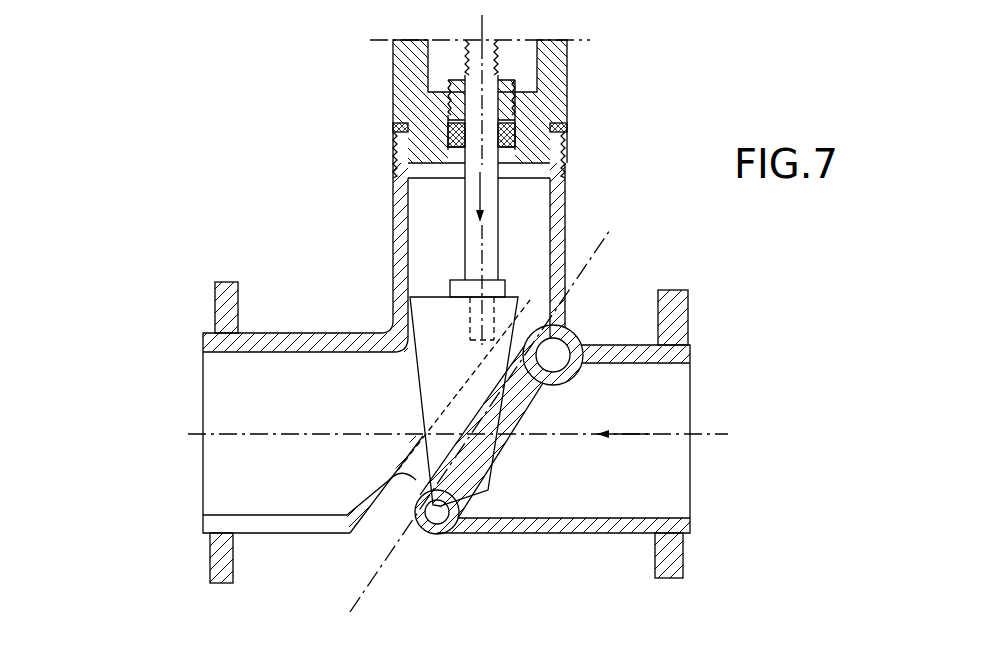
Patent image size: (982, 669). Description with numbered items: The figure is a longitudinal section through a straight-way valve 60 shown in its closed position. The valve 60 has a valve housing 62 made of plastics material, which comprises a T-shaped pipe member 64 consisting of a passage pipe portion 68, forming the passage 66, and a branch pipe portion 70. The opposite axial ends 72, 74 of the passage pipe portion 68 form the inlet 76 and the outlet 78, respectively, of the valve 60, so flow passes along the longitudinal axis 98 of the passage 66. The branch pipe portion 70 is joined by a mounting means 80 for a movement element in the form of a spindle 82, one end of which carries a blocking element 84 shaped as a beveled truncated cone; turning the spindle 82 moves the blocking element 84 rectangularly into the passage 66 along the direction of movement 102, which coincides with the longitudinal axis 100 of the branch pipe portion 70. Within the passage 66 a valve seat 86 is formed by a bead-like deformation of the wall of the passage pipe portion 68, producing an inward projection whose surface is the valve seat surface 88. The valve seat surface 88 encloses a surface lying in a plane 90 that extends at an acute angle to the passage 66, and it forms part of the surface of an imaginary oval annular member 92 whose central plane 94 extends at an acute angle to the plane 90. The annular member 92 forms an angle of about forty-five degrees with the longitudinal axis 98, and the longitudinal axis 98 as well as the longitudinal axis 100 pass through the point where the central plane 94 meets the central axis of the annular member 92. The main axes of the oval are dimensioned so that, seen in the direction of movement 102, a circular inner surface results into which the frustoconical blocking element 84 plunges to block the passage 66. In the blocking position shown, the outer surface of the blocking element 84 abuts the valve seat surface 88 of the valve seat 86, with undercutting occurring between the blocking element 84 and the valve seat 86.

The valve 60 is at (288, 106).
The valve housing 62 is at (348, 245).
The T-shaped pipe member 64 is at (620, 255).
The passage 66 is at (560, 488).
The passage pipe portion 68 is at (626, 556).
The branch pipe portion 70 is at (591, 153).
The axial end 72 is at (680, 476).
The axial end 74 is at (228, 460).
The inlet 76 is at (722, 414).
The outlet 78 is at (188, 377).
The mounting means 80 is at (555, 82).
The spindle 82 is at (470, 88).
The blocking element 84 is at (433, 377).
The valve seat 86 is at (560, 373).
The valve seat surface 88 is at (513, 350).
The plane 90 is at (358, 608).
The annular member 92 is at (393, 523).
The central plane 94 is at (618, 292).
The longitudinal axis 98 is at (286, 430).
The longitudinal axis 100 is at (480, 20).
The direction of movement 102 is at (482, 187).